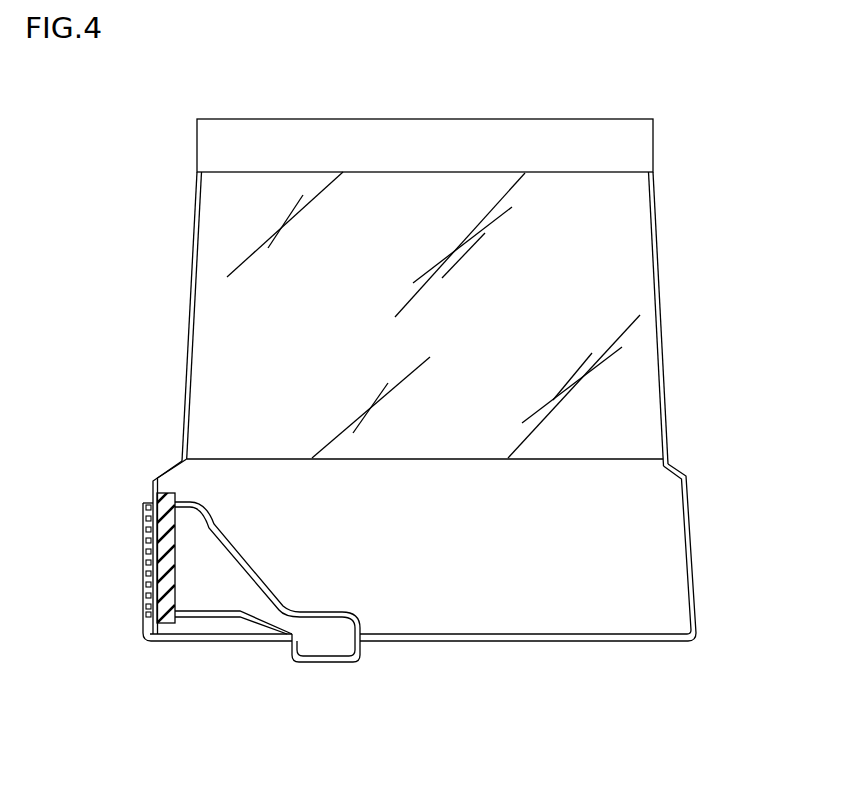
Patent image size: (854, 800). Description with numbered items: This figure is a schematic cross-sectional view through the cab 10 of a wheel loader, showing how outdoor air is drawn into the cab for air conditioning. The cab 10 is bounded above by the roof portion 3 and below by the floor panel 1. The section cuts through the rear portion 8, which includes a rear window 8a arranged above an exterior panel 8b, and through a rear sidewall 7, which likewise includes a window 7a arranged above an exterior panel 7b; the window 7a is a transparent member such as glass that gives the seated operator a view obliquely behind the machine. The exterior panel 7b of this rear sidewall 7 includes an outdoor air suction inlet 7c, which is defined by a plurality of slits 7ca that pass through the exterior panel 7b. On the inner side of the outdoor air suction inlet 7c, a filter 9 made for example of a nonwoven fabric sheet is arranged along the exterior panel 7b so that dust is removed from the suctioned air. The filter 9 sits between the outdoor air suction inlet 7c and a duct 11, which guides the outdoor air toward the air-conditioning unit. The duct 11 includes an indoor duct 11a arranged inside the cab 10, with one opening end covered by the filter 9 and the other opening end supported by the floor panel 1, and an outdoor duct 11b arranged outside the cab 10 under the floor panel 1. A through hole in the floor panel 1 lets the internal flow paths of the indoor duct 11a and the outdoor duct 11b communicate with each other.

The floor panel 1 is at (554, 643).
The roof portion 3 is at (443, 118).
The rear sidewall 7 is at (78, 372).
The window 7a is at (188, 350).
The exterior panel 7b is at (150, 503).
The outdoor air suction inlet 7c is at (78, 492).
The slits 7ca is at (146, 511).
The rear portion 8 is at (720, 285).
The rear window 8a is at (608, 297).
The exterior panel 8b is at (542, 505).
The filter 9 is at (161, 637).
The cab 10 is at (680, 98).
The duct 11 is at (308, 687).
The indoor duct 11a is at (217, 618).
The outdoor duct 11b is at (288, 647).